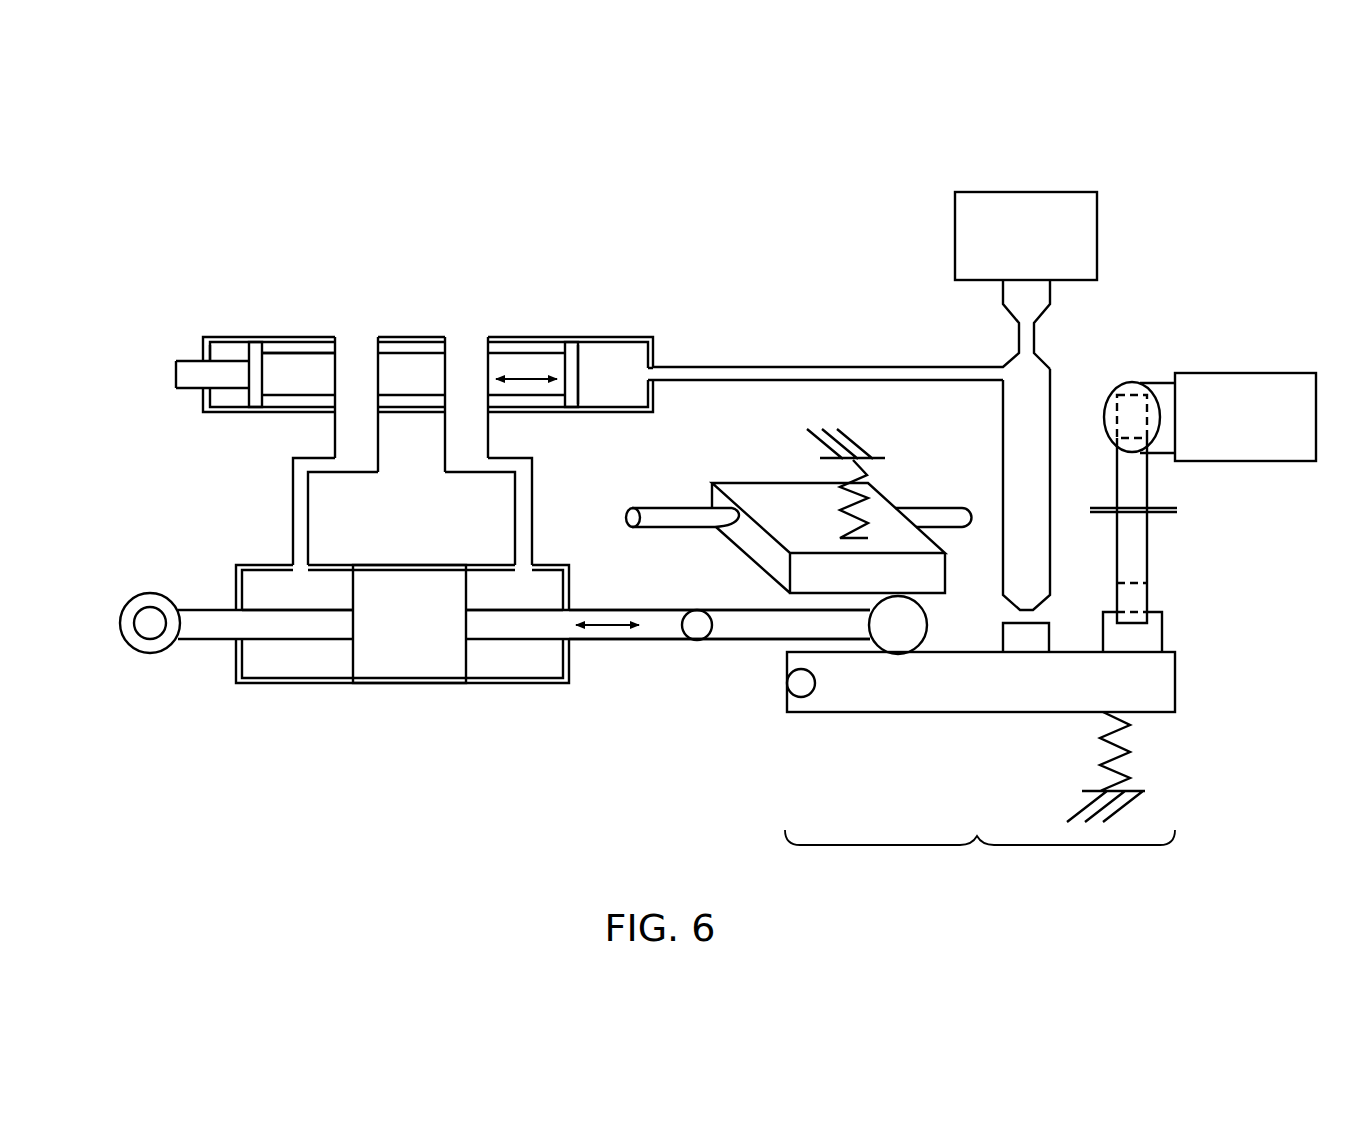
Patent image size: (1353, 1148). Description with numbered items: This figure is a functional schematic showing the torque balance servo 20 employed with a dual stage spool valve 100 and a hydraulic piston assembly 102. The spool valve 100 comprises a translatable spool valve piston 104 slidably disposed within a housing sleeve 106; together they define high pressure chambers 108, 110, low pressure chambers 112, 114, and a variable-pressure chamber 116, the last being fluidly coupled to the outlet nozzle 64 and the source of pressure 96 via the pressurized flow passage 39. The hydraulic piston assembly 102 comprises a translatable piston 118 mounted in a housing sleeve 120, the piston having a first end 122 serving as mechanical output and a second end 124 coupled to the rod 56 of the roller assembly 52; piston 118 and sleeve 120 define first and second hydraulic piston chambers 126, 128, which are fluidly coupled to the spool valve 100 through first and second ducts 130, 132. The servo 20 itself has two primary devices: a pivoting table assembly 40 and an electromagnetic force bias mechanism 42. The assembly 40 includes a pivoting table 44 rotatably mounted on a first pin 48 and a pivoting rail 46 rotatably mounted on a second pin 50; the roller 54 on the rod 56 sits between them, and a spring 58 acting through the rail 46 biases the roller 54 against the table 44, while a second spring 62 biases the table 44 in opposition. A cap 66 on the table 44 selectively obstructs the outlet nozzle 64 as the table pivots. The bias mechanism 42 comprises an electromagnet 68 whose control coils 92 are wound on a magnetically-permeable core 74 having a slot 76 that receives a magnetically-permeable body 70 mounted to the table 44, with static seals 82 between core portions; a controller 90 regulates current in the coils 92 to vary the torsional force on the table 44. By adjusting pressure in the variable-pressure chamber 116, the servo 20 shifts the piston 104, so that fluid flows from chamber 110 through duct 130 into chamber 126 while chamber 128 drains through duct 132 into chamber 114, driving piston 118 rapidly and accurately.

The dual stage spool valve 100 is at (203, 240).
The torque balance servo 20 is at (677, 290).
The hydraulic piston assembly 102 is at (198, 570).
The spool valve piston 104 is at (414, 374).
The housing sleeve 106 is at (591, 414).
The high pressure chamber 108 is at (230, 347).
The high pressure chamber 110 is at (412, 347).
The low pressure chamber 112 is at (305, 347).
The low pressure chamber 114 is at (530, 347).
The variable-pressure chamber 116 is at (616, 347).
The translatable piston 118 is at (409, 624).
The housing sleeve 120 is at (262, 686).
The first end 122 is at (147, 653).
The second end 124 is at (608, 641).
The first hydraulic piston chamber 126 is at (297, 595).
The second hydraulic piston chamber 128 is at (514, 595).
The first duct 130 is at (300, 525).
The second duct 132 is at (520, 525).
The pressurized flow passage 39 is at (806, 374).
The outlet nozzle 64 is at (1026, 489).
The source of pressure 96 is at (1066, 192).
The electromagnetic force bias mechanism 42 is at (1249, 355).
The controller 90 is at (1300, 463).
The electromagnet 68 is at (1113, 386).
The control coils 92 is at (1108, 438).
The magnetically-permeable core 74 is at (1147, 551).
The slot 76 is at (1117, 593).
The static seal 82 is at (1176, 506).
The magnetically-permeable body 70 is at (1162, 636).
The cap 66 is at (1003, 641).
The pivoting table 44 is at (981, 682).
The first pin 48 is at (787, 683).
The roller 54 is at (898, 625).
The rod 56 is at (719, 628).
The roller assembly 52 is at (722, 652).
The pivoting rail 46 is at (828, 538).
The second pin 50 is at (673, 510).
The spring 58 is at (873, 472).
The second spring 62 is at (1100, 763).
The pivoting table assembly 40 is at (980, 860).